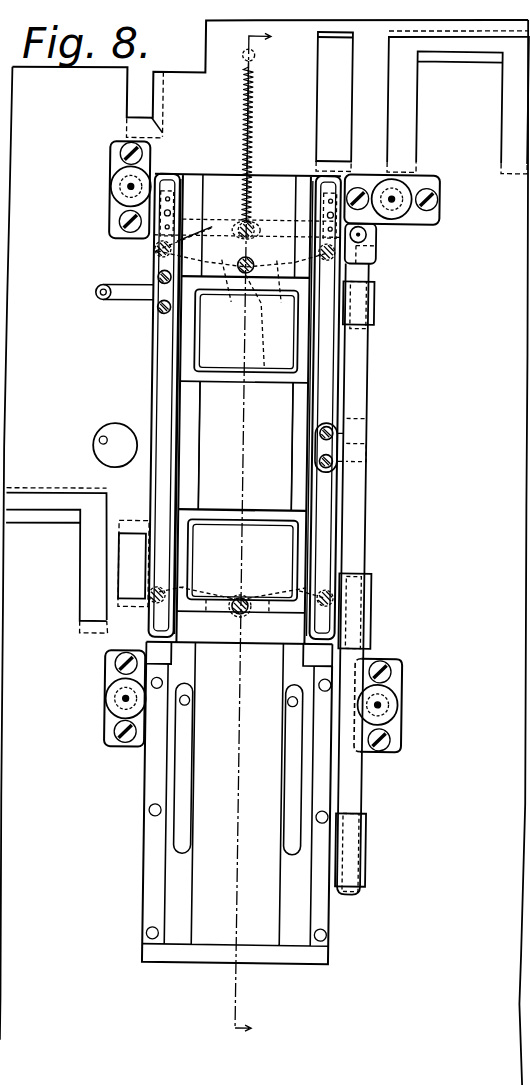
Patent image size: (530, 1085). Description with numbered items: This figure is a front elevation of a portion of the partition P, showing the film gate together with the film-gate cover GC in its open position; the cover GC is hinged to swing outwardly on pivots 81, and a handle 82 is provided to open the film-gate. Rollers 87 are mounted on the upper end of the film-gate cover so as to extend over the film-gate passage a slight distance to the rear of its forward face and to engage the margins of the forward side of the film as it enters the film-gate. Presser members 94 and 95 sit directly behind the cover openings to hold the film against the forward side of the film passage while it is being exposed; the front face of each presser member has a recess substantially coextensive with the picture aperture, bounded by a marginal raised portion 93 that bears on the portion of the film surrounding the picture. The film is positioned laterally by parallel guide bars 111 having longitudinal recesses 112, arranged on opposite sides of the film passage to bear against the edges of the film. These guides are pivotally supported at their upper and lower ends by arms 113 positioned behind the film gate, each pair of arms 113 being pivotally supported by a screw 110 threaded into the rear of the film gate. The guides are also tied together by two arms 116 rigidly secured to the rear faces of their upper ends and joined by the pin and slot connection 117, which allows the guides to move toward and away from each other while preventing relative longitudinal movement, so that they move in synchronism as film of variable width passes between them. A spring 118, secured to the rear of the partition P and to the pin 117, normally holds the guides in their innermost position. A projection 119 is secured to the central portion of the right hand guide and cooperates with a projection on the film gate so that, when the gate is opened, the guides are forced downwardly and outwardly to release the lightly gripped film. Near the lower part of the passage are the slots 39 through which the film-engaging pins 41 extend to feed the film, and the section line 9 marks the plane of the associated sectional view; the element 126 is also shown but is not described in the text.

The section line 9- 9 is at (263, 537).
The spring 118 is at (250, 121).
The pin and slot connection 117 is at (238, 226).
The arms 116 is at (150, 252).
The arms 113 is at (249, 450).
The screw 110 is at (239, 434).
The marginal raised portion 93 is at (298, 560).
The presser member 94 is at (269, 357).
The lower presser member 95 is at (212, 551).
The guide bars 111 is at (325, 383).
The longitudinal recesses 112 is at (308, 473).
The handle 82 is at (93, 292).
The rollers 87 is at (362, 240).
The pivots 81 is at (366, 849).
The lug 126 is at (360, 429).
The projection 119 is at (355, 450).
The slots 39 is at (292, 767).
The film-engaging pins 41 is at (291, 703).
The film-gate cover GC is at (150, 373).
The inner glass IG is at (214, 186).
The partition P is at (473, 519).